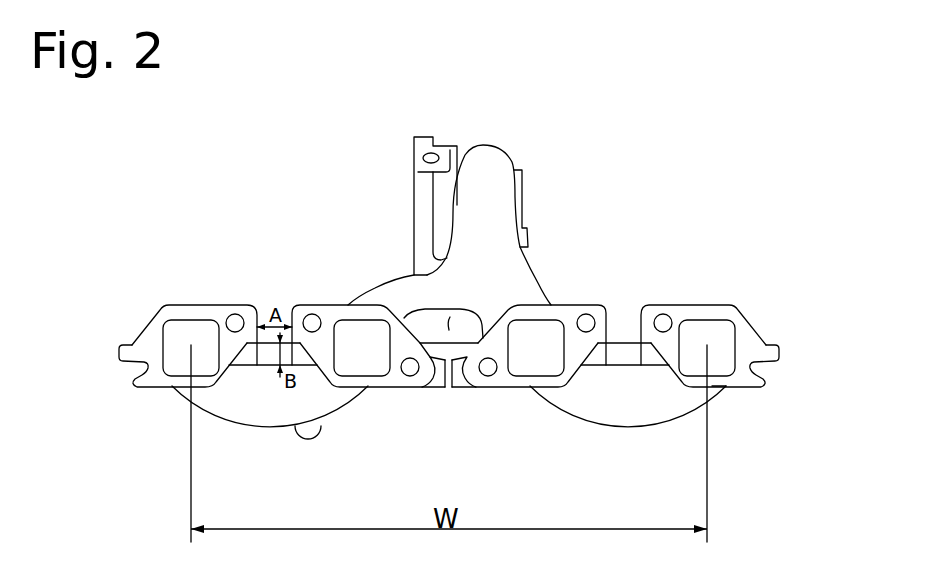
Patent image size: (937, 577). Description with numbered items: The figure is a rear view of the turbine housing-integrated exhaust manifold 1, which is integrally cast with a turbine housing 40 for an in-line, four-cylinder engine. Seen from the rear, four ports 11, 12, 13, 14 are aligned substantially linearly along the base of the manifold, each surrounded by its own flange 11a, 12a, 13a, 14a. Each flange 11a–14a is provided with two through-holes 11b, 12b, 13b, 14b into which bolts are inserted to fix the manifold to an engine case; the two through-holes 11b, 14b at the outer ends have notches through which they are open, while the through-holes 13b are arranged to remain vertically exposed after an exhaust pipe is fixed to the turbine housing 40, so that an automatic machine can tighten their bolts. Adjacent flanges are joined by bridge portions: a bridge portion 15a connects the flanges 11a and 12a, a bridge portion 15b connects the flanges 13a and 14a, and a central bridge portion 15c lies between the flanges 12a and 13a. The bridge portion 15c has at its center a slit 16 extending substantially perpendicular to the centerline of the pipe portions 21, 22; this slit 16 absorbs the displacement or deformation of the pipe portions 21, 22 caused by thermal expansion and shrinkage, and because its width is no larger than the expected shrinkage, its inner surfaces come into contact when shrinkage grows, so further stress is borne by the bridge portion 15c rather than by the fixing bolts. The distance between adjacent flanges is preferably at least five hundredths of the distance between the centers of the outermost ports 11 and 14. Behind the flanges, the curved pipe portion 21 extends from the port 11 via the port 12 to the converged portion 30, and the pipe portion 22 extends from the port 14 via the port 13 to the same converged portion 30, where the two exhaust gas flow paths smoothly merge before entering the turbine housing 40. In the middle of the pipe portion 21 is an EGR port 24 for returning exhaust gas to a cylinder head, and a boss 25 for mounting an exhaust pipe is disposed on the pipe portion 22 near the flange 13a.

The turbine housing-integrated exhaust manifold 1 is at (690, 178).
The port 11 is at (688, 367).
The flange 11a is at (722, 305).
The through-hole 11b is at (657, 314).
The port 12 is at (548, 358).
The flange 12a is at (512, 388).
The through-hole 12b is at (488, 377).
The port 13 is at (360, 351).
The flange 13a is at (337, 388).
The through-hole 13b is at (309, 314).
The port 14 is at (173, 350).
The flange 14a is at (190, 308).
The through-hole 14b is at (232, 314).
The bridge portion 15a is at (616, 358).
The bridge portion 15b is at (271, 366).
The bridge portion 15c is at (455, 388).
The slit 16 is at (447, 388).
The pipe portion 21 is at (626, 420).
The pipe portion 22 is at (218, 400).
The port 24 is at (722, 390).
The boss 25 is at (313, 443).
The converged portion 30 is at (480, 268).
The turbine housing 40 is at (425, 200).